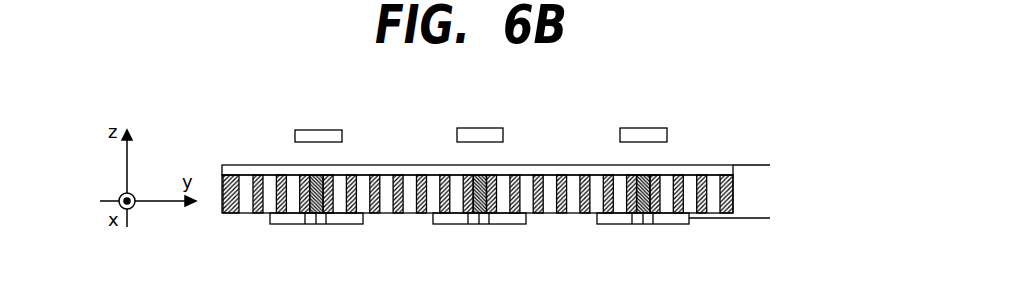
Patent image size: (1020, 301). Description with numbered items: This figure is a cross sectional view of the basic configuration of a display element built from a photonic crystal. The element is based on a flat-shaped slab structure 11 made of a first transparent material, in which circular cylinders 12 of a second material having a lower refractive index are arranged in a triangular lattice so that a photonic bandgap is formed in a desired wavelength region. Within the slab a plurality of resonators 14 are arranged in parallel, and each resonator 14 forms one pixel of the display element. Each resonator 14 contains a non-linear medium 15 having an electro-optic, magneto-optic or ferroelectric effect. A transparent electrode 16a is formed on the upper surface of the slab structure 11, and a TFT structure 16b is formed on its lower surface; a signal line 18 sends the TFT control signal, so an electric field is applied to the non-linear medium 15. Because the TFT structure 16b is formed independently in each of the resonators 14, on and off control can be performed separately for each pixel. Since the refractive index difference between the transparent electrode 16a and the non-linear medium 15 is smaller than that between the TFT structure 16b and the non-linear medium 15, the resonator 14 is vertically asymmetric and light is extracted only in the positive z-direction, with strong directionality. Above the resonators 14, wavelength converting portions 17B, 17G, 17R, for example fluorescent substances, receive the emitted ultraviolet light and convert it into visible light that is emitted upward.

The slab structure 11 is at (233, 176).
The circular cylinders 12 is at (248, 201).
The resonator 14 is at (298, 181).
The non-linear medium 15 is at (320, 217).
The transparent electrode 16a is at (717, 165).
The TFT structure 16b is at (293, 221).
The wavelength converting portion 17B is at (330, 130).
The wavelength converting portion 17G is at (488, 132).
The wavelength converting portion 17R is at (658, 128).
The signal line 18 is at (745, 218).